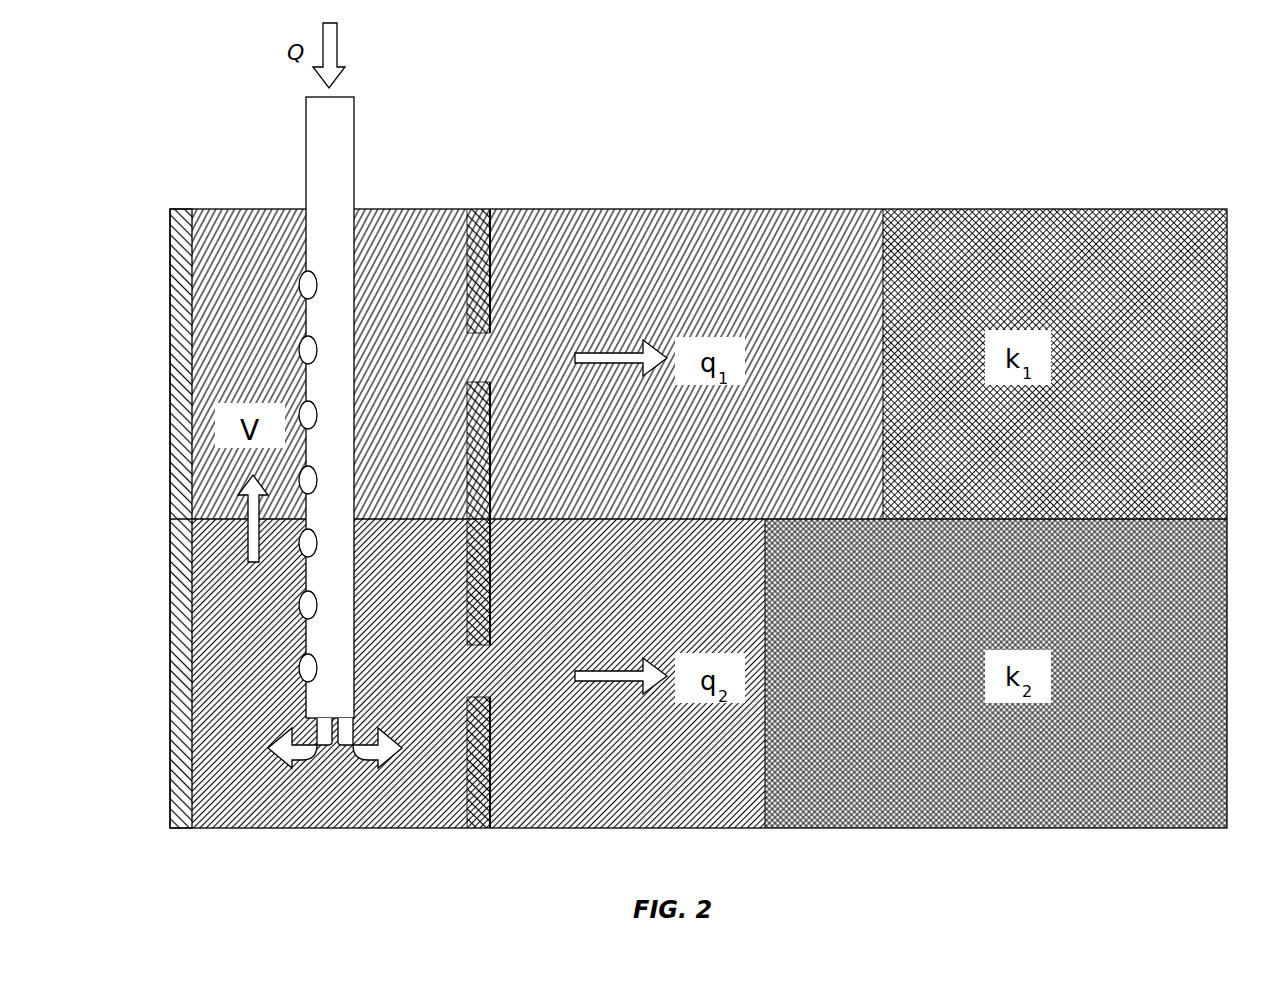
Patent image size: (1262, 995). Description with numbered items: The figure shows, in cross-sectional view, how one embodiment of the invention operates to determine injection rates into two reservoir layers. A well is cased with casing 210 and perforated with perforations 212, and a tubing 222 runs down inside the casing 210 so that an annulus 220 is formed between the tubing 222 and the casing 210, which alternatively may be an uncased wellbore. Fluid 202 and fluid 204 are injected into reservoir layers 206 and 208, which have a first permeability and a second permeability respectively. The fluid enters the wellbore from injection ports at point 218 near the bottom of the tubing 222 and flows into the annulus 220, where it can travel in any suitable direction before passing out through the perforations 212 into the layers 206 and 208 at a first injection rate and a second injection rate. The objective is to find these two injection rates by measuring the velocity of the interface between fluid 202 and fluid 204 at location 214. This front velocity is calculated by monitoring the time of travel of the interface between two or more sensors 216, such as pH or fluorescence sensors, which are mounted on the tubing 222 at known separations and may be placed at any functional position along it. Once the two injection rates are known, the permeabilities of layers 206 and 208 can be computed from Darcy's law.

The fluid 202 is at (198, 378).
The fluid 204 is at (195, 690).
The reservoir layer 206 is at (1037, 222).
The reservoir layer 208 is at (1060, 830).
The casing 210 is at (180, 830).
The perforations 212 is at (470, 362).
The location of fluid interface 214 is at (202, 517).
The sensors 216 is at (298, 616).
The injection ports 218 is at (333, 722).
The annulus 220 is at (225, 208).
The tubing 222 is at (315, 152).